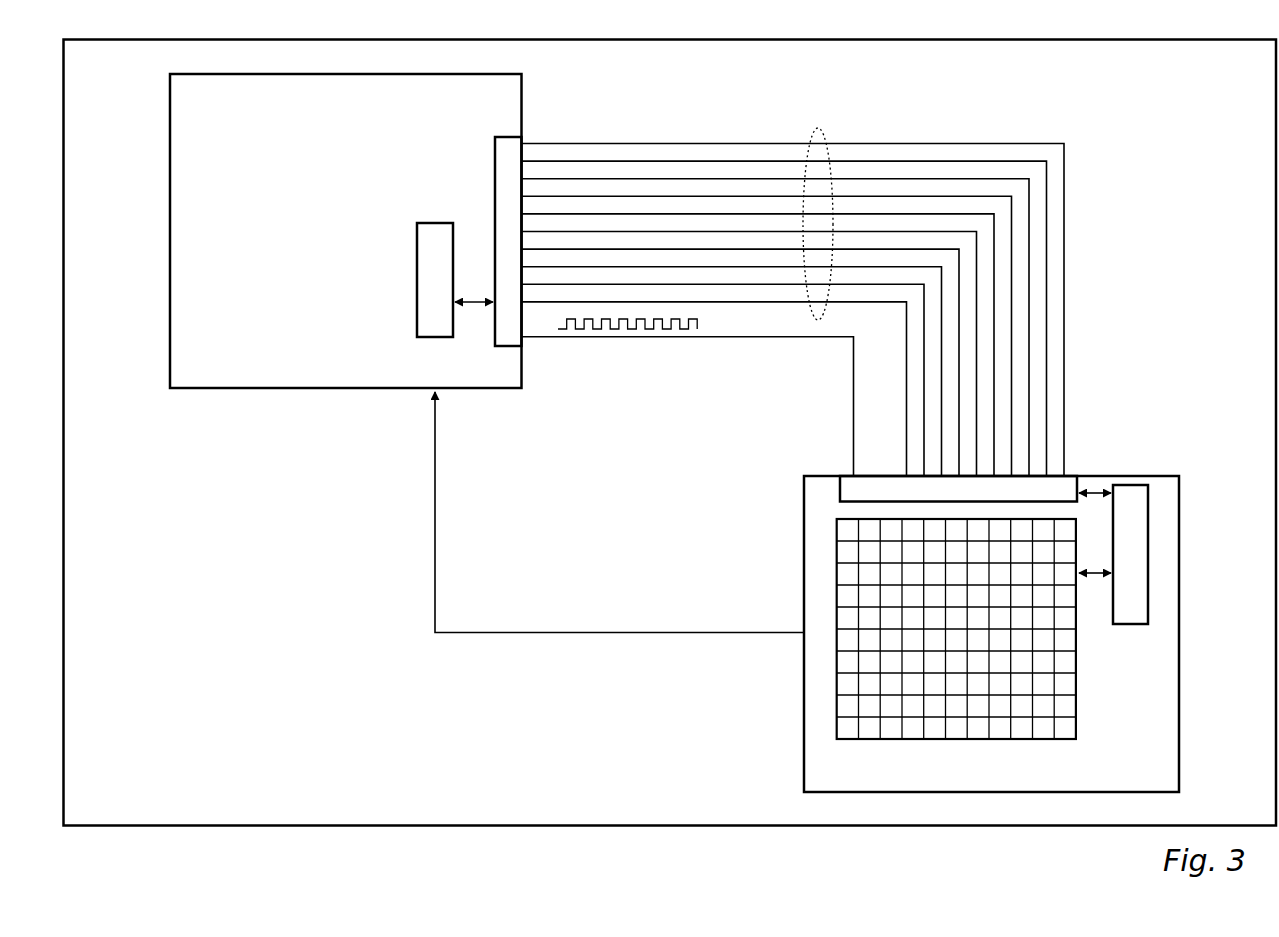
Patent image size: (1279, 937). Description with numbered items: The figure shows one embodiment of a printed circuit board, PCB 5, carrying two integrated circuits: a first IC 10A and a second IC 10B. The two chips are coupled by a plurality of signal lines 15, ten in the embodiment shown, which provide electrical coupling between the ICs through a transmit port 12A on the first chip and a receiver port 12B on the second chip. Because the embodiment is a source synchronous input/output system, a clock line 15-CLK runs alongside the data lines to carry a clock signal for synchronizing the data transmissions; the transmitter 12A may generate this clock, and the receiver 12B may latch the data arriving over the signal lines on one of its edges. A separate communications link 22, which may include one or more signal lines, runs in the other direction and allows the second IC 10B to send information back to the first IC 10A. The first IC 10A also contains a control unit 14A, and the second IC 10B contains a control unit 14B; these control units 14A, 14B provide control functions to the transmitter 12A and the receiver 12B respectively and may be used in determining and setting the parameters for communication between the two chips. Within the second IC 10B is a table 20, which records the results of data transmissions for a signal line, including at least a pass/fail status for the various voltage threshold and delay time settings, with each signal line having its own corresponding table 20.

The PCB 5 is at (663, 457).
The first IC 10A is at (328, 258).
The second IC 10B is at (1040, 786).
The transmit port 12A is at (505, 137).
The receiver port 12B is at (1073, 475).
The control unit 14A is at (437, 338).
The control unit 14B is at (1148, 529).
The signal lines 15 is at (820, 128).
The clock line 15-CLK is at (677, 338).
The table 20 is at (1080, 717).
The communications link 22 is at (608, 635).